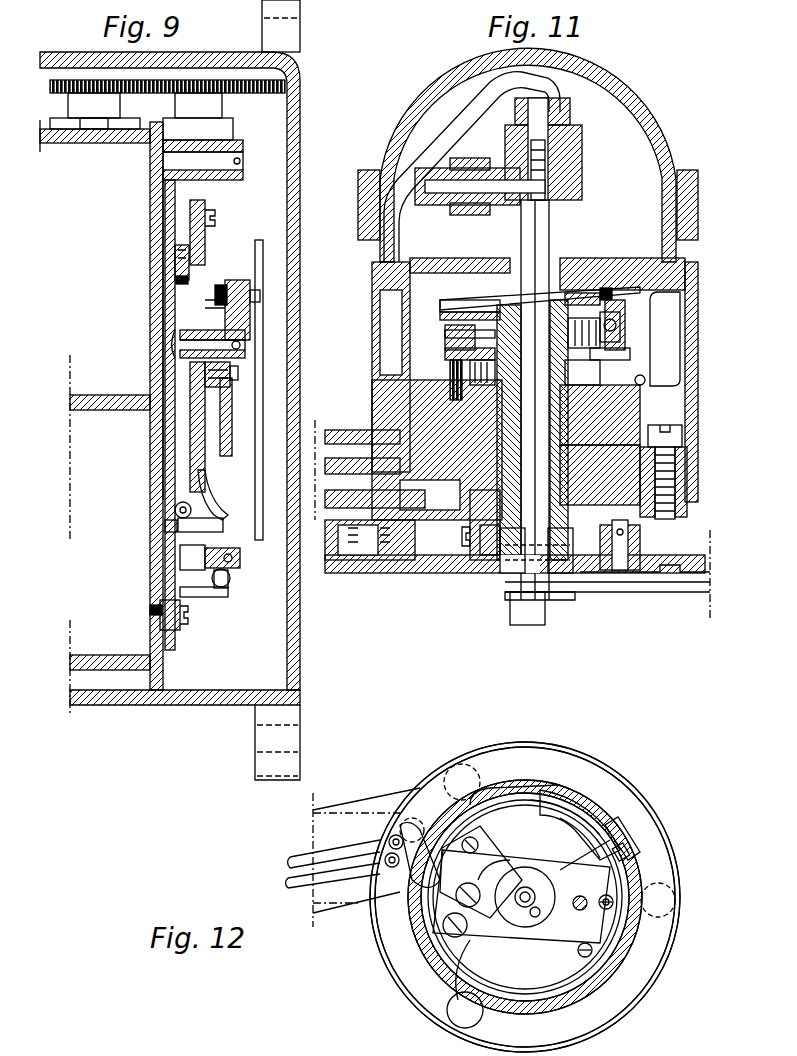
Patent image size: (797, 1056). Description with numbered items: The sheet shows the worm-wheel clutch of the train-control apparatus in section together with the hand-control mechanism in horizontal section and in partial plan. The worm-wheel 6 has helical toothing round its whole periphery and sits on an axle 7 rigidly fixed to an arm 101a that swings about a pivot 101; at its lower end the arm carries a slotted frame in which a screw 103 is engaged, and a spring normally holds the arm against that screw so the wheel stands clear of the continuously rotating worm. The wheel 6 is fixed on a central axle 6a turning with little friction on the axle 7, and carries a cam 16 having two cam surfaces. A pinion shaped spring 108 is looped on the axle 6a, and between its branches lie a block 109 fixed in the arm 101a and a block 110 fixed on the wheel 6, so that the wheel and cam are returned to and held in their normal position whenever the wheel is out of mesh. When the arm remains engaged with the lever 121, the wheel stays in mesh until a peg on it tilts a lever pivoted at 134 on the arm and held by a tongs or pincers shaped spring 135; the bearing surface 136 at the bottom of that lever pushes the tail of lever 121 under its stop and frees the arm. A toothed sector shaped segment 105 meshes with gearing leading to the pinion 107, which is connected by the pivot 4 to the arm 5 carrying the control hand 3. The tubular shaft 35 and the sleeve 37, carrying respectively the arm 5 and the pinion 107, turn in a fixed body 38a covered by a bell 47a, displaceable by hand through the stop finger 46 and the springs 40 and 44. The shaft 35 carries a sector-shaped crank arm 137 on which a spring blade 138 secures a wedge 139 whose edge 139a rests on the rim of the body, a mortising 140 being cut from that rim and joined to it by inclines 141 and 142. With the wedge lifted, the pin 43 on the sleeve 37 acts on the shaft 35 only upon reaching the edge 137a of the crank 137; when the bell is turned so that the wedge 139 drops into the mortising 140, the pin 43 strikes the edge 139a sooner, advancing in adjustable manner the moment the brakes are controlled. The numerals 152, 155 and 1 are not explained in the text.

In FIG. 9, the pivot 101 is at (185, 165).
In FIG. 9, the arm 101a is at (168, 226).
In FIG. 9, the pinion shaped spring 108 is at (175, 253).
In FIG. 9, the block 109 is at (176, 280).
In FIG. 9, the block 110 is at (200, 262).
In FIG. 9, the pin 152 is at (215, 220).
In FIG. 9, the axle 7 is at (192, 345).
In FIG. 9, the central axle 6a is at (192, 375).
In FIG. 9, the worm-wheel 6 is at (197, 420).
In FIG. 9, the cam 16 is at (225, 449).
In FIG. 9, the toothed sector shaped segment 105 is at (258, 452).
In FIG. 9, the pawl 155 is at (212, 495).
In FIG. 9, the tongs or pincers shaped spring 135 is at (182, 530).
In FIG. 9, the pivot of lever 133 134 is at (232, 560).
In FIG. 9, the cam or bearing surface 136 is at (229, 582).
In FIG. 9, the lever 121 is at (226, 592).
In FIG. 9, the screw 103 is at (183, 620).
In FIG. 11, the spring blade 138 is at (447, 262).
In FIG. 12, the spring blade 138 is at (475, 935).
In FIG. 11, the incline 141 is at (478, 258).
In FIG. 12, the incline 141 is at (470, 805).
In FIG. 11, the wedge 139 is at (560, 258).
In FIG. 12, the wedge 139 is at (565, 830).
In FIG. 11, the stop finger 46 is at (592, 258).
In FIG. 12, the stop finger 46 is at (576, 912).
In FIG. 11, the mortising 140 is at (620, 258).
In FIG. 12, the mortising 140 is at (545, 800).
In FIG. 11, the bell 47a is at (695, 274).
In FIG. 12, the bell 47a is at (615, 972).
In FIG. 11, the incline 142 is at (650, 300).
In FIG. 12, the incline 142 is at (585, 862).
In FIG. 11, the pin 43 is at (612, 320).
In FIG. 12, the pin 43 is at (613, 903).
In FIG. 11, the tubular shaft 35 is at (640, 393).
In FIG. 12, the tubular shaft 35 is at (523, 912).
In FIG. 11, the sleeve 37 is at (575, 420).
In FIG. 11, the crank arm 137 is at (440, 327).
In FIG. 12, the crank arm 137 is at (430, 830).
In FIG. 11, the spring 44 is at (470, 350).
In FIG. 11, the spring 40 is at (450, 370).
In FIG. 11, the fixed body 38a is at (402, 480).
In FIG. 12, the fixed body 38a is at (617, 934).
In FIG. 11, the pinion 107 is at (458, 505).
In FIG. 11, the pivot 4 is at (618, 560).
In FIG. 11, the control hand 3 is at (700, 575).
In FIG. 11, the arm 5 is at (565, 592).
In FIG. 11, the base plate 1 is at (665, 594).
In FIG. 12, the edge of crank 137 137a is at (520, 855).
In FIG. 12, the edge of wedge 139 139a is at (610, 835).